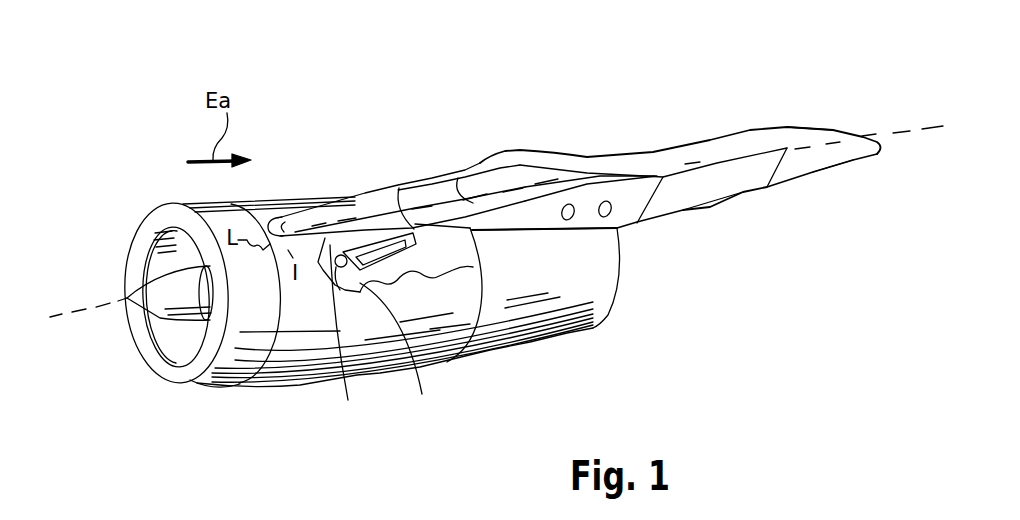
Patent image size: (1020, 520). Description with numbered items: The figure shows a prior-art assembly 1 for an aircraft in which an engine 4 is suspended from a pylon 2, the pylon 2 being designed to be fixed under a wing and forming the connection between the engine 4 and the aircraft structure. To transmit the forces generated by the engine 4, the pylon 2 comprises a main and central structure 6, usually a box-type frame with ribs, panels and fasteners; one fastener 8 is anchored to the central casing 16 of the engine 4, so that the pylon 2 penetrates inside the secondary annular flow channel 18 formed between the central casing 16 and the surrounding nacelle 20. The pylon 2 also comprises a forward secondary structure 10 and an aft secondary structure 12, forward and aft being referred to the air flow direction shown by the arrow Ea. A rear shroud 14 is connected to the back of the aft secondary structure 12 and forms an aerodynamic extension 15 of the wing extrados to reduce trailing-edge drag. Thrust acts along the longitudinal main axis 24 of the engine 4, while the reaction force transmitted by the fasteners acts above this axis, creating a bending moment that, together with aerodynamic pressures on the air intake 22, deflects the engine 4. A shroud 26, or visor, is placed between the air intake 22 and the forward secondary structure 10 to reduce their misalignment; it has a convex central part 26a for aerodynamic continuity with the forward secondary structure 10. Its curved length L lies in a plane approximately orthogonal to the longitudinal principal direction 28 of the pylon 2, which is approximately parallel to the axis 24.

The assembly 1 is at (262, 82).
The pylon 2 is at (626, 152).
The engine 4 is at (533, 352).
The main and central structure 6 is at (537, 216).
The fastener 8 is at (416, 344).
The forward secondary structure 10 is at (440, 197).
The aft secondary structure 12 is at (711, 198).
The rear shroud 14 is at (823, 163).
The aerodynamic extension 15 is at (827, 133).
The central casing 16 is at (345, 338).
The secondary annular flow channel 18 is at (143, 258).
The nacelle 20 is at (292, 370).
The air intake 22 is at (232, 372).
The longitudinal main axis 24 is at (52, 317).
The shroud 26 is at (268, 212).
The convex central part 26a is at (294, 238).
The longitudinal principal direction 28 is at (923, 128).